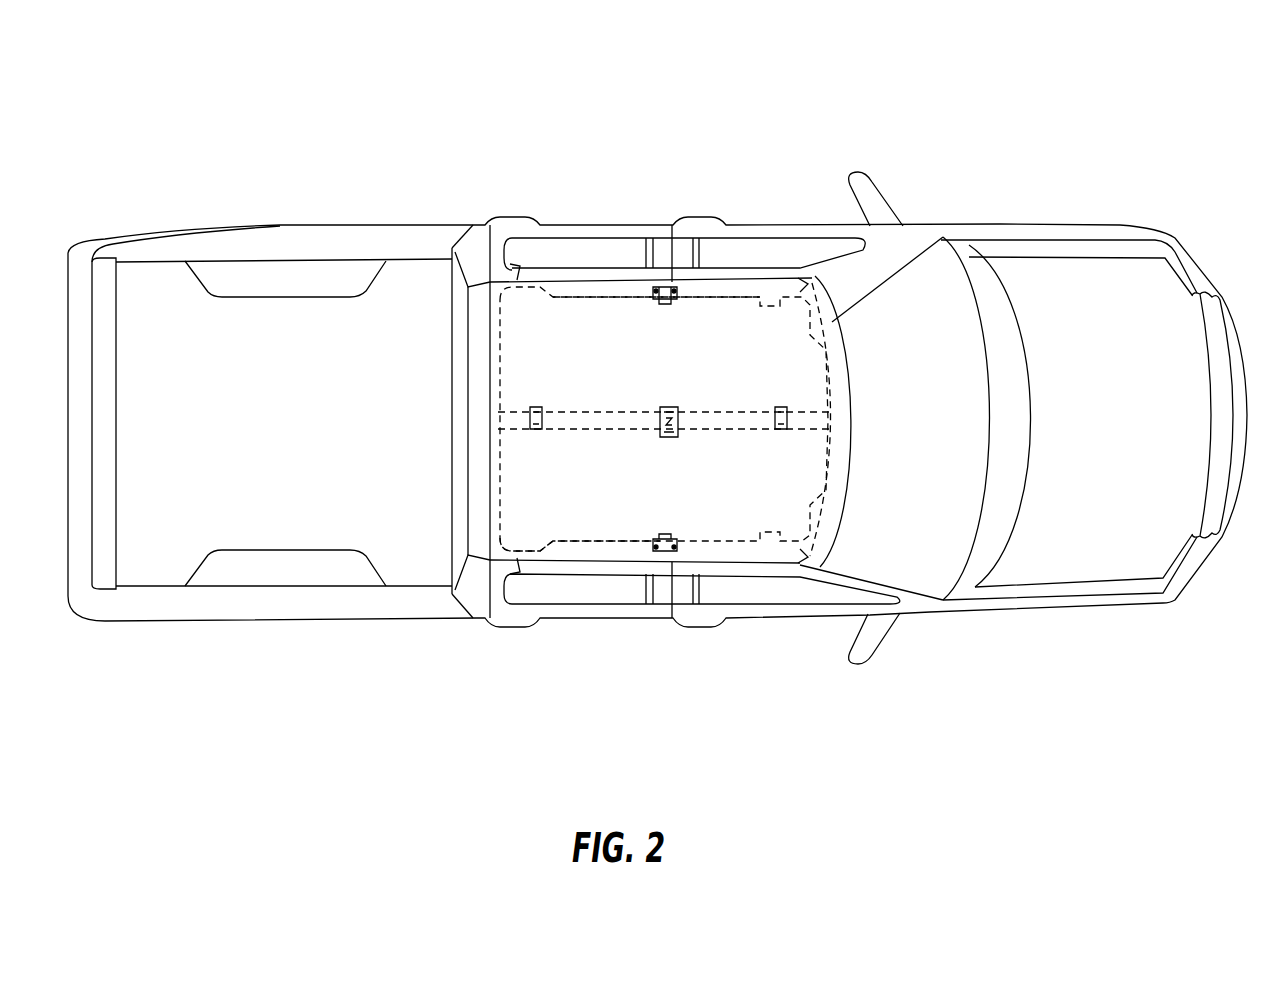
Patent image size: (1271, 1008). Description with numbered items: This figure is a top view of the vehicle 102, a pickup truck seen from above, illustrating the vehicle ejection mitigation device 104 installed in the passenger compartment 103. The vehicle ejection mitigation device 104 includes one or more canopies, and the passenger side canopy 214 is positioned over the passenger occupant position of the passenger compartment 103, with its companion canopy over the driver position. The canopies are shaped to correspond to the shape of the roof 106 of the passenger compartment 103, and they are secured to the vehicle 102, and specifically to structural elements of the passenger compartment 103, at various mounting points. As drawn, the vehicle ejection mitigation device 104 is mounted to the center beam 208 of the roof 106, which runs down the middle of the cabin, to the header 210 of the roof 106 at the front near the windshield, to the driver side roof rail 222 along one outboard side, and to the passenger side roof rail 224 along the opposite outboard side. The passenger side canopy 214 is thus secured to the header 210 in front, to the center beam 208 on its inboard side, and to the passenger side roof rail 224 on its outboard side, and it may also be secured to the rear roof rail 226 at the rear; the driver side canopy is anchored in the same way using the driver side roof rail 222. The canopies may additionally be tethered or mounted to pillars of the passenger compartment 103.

The vehicle 102 is at (657, 405).
The passenger compartment 103 is at (936, 644).
The vehicle ejection mitigation device 104 is at (772, 300).
The roof 106 is at (753, 290).
The center beam 208 is at (728, 418).
The header 210 is at (832, 325).
The passenger side canopy 214 is at (590, 500).
The driver side roof rail 222 is at (728, 288).
The passenger side roof rail 224 is at (633, 550).
The rear roof rail 226 is at (528, 415).